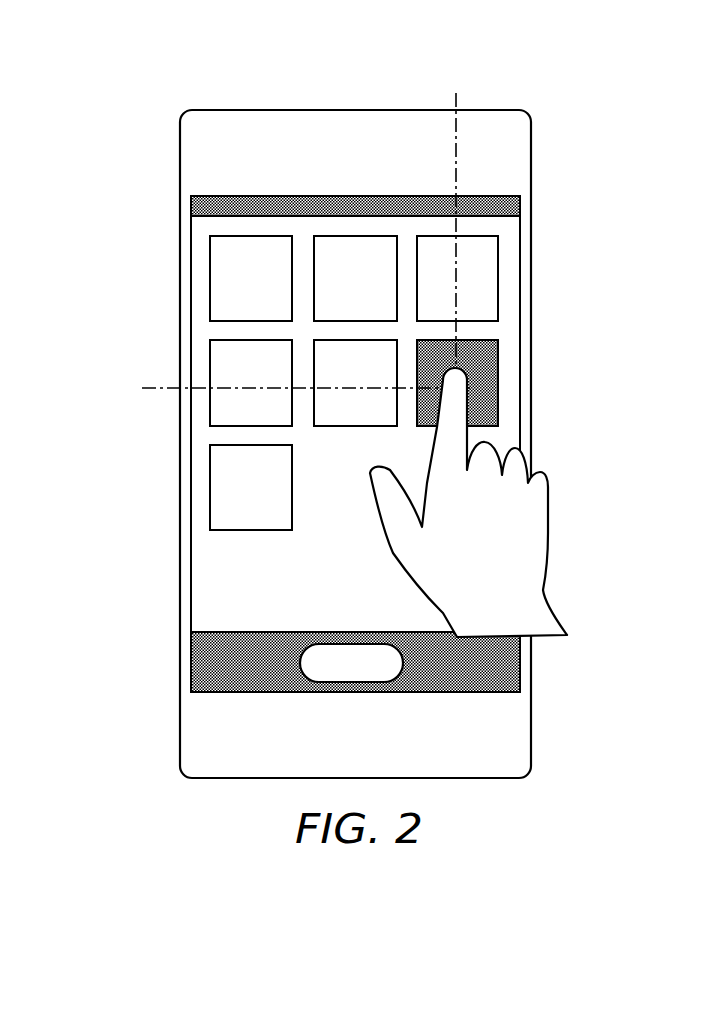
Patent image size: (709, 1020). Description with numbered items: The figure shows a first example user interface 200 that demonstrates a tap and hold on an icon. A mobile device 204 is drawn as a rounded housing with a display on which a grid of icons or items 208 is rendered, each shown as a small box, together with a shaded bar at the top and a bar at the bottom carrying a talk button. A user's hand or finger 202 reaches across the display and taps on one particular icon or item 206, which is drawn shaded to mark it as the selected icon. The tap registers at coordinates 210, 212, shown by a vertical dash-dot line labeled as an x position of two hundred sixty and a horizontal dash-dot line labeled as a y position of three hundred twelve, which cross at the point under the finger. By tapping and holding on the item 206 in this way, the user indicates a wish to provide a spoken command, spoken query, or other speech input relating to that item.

The user interface 200 is at (337, 84).
The user's hand or finger 202 is at (548, 533).
The mobile device 204 is at (531, 140).
The icon or item 206 is at (498, 375).
The icons 208 is at (232, 290).
The x coordinate of the tap 210 is at (557, 65).
The y coordinate of the tap 212 is at (85, 335).